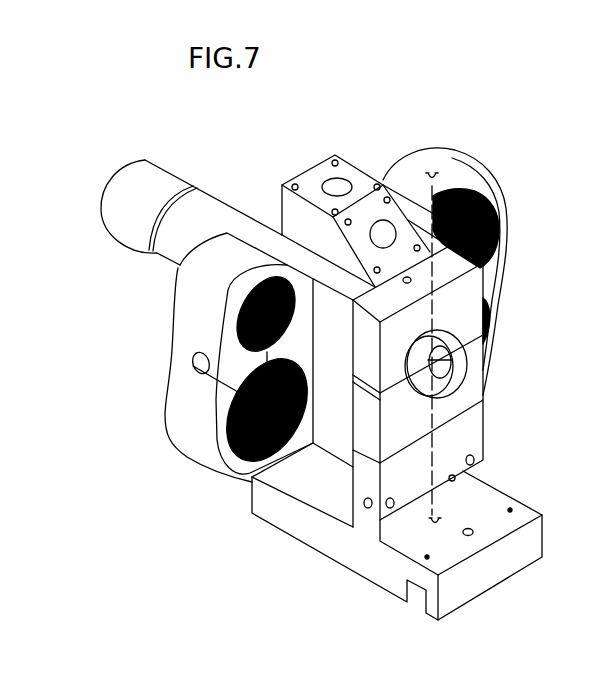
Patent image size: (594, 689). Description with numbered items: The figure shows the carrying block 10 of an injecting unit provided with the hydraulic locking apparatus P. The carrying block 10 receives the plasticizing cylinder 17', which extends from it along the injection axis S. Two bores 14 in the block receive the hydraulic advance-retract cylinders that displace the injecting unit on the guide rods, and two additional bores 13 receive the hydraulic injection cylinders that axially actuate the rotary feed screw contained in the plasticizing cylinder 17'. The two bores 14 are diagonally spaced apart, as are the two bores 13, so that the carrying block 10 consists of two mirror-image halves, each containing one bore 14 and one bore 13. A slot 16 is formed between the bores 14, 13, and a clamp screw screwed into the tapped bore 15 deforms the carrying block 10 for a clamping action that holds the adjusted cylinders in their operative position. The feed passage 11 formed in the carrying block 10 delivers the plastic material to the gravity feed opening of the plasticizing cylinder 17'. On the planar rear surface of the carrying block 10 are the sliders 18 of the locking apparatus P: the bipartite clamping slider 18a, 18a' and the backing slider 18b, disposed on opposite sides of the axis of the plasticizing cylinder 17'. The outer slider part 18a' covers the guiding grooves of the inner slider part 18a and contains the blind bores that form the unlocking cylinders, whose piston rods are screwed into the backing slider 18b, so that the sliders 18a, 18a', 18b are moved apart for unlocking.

The carrying block 10 is at (398, 151).
The feed passage 11 is at (381, 229).
The additional bores 13 is at (253, 468).
The bores 14 is at (247, 305).
The tapped bore 15 is at (190, 365).
The slot 16 is at (260, 358).
The plasticizing cylinder 17' is at (191, 194).
The sliders 18 is at (493, 420).
The inner slider part 18a is at (473, 396).
The backing slider 18b is at (462, 298).
The outer slider part 18a' is at (465, 474).
The locking apparatus P is at (341, 494).
The injection axis S is at (107, 182).